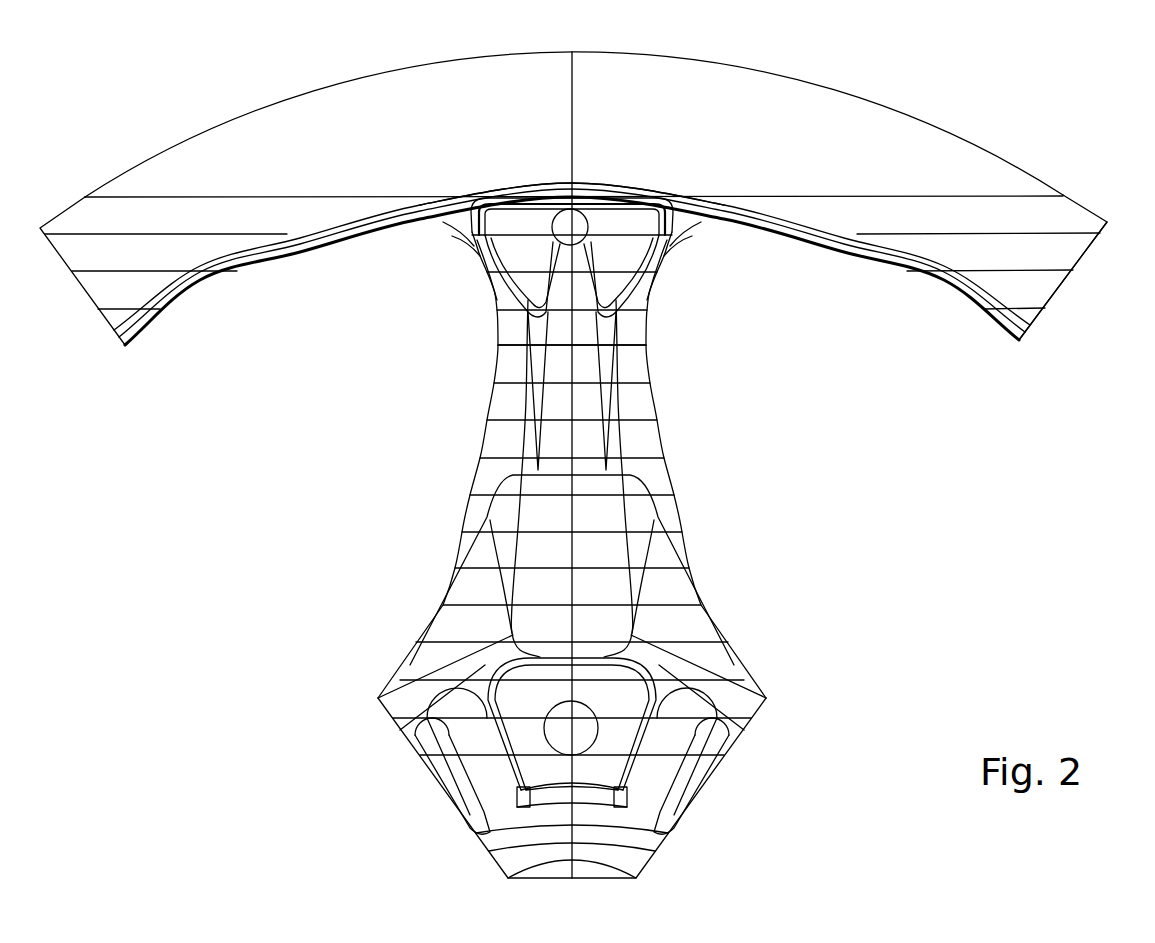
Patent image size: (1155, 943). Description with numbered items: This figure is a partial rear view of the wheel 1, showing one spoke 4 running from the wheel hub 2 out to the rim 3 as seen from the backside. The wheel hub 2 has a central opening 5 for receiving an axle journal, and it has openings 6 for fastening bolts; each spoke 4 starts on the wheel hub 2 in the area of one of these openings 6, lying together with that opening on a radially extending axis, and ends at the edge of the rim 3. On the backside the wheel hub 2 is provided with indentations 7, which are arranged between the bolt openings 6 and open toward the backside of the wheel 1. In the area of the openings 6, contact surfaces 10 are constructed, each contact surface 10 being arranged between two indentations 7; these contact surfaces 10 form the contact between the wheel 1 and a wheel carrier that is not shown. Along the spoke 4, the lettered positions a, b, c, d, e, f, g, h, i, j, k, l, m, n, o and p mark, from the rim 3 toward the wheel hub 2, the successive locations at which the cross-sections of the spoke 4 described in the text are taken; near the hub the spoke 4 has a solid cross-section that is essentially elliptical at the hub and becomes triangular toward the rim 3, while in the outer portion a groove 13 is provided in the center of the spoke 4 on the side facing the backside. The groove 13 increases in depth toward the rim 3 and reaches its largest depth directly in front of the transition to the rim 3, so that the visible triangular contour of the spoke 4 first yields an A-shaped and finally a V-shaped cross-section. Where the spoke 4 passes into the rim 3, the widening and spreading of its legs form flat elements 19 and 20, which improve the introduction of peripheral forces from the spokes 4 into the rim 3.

The wheel 1 is at (1088, 155).
The wheel hub 2 is at (735, 730).
The rim 3 is at (1088, 250).
The spokes 4 is at (672, 518).
The central opening 5 is at (586, 908).
The openings 6 is at (568, 728).
The indentations 7 is at (455, 785).
The contact surfaces 10 is at (623, 703).
The groove 13 is at (585, 334).
The flat element 19 is at (441, 238).
The flat element 20 is at (683, 248).
The lamination layer a is at (430, 207).
The lamination layer b is at (473, 240).
The lamination layer c is at (500, 285).
The lamination layer d is at (500, 320).
The lamination layer e is at (505, 350).
The lamination layer f is at (493, 390).
The lamination layer g is at (505, 420).
The lamination layer h is at (490, 458).
The lamination layer i is at (485, 495).
The lamination layer j is at (470, 532).
The lamination layer k is at (458, 568).
The lamination layer l is at (440, 605).
The lamination layer m is at (455, 642).
The lamination layer n is at (400, 680).
The lamination layer o is at (395, 720).
The lamination layer p is at (420, 758).